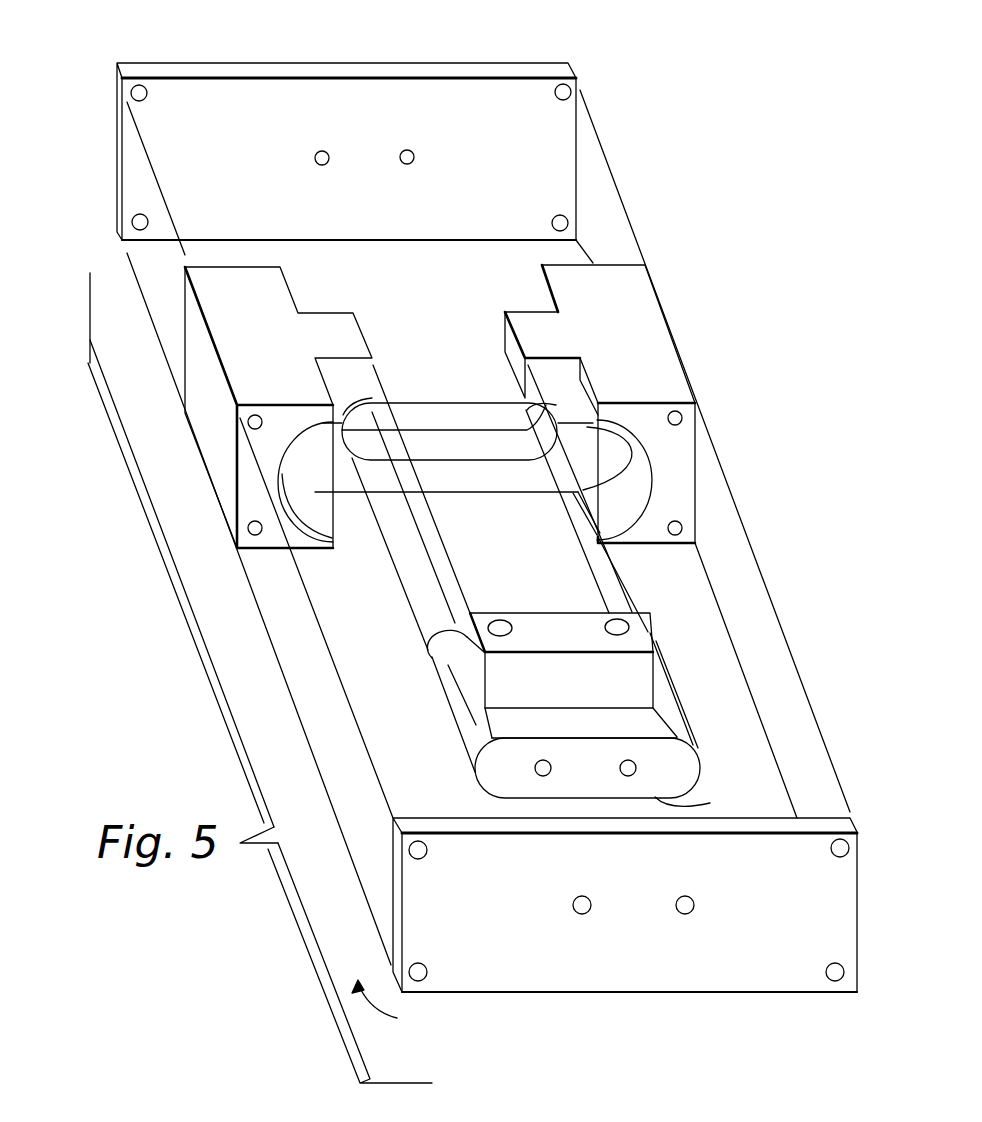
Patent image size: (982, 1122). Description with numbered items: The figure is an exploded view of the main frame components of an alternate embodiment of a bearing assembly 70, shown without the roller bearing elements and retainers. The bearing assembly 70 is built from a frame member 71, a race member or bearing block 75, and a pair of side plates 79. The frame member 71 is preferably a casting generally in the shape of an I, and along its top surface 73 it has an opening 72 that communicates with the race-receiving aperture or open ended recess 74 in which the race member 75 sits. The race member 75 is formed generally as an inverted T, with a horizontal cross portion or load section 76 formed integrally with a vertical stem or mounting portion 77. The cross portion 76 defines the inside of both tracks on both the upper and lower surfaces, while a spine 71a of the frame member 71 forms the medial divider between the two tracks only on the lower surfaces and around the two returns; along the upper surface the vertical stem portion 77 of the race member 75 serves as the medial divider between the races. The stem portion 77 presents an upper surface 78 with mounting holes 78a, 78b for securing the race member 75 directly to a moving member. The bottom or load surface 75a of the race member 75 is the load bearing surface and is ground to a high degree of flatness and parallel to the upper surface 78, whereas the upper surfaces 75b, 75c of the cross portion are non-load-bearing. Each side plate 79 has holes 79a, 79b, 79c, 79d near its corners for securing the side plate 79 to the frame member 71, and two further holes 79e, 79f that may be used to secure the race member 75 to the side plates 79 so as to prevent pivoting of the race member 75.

The bearing assembly 70 is at (390, 1010).
The frame member 71 is at (660, 335).
The spine 71a is at (461, 478).
The opening 72 is at (455, 348).
The top surface 73 is at (270, 349).
The race-receiving aperture 74 is at (470, 458).
The race member 75 is at (572, 719).
The bottom or load surface 75a is at (685, 808).
The upper surface 75b is at (569, 734).
The upper surface 75c is at (460, 633).
The horizontal cross portion 76 is at (683, 772).
The vertical stem portion 77 is at (595, 692).
The upper surface 78 is at (583, 608).
The mounting hole 78a is at (497, 620).
The mounting hole 78b is at (620, 623).
The side plate 79 is at (487, 549).
The hole 79a is at (143, 100).
The hole 79b is at (558, 98).
The hole 79c is at (560, 218).
The hole 79d is at (142, 218).
The hole 79e is at (335, 136).
The hole 79f is at (408, 152).